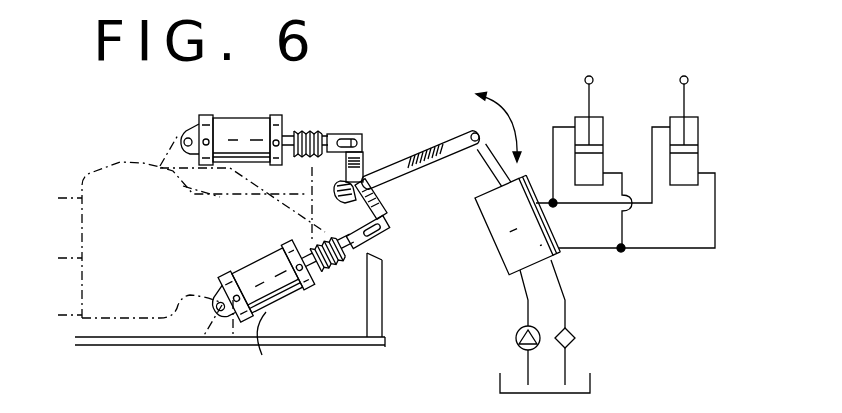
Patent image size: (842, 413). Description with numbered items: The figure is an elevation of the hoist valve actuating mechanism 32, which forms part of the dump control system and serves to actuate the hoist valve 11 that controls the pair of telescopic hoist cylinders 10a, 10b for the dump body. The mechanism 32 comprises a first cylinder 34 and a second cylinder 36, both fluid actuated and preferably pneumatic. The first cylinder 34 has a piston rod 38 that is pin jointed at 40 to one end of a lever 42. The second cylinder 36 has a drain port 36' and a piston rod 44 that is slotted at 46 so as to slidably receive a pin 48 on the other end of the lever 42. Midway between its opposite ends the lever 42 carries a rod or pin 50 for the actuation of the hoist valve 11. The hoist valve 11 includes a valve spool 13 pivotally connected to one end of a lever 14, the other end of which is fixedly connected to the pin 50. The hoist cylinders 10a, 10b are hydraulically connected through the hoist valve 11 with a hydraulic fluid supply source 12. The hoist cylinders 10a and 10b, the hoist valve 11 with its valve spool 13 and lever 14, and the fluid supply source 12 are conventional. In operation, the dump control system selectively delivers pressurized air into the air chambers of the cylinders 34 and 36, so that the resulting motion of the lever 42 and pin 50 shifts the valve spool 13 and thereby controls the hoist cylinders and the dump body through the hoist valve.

The hoist cylinder 10a is at (575, 118).
The hoist cylinder 10b is at (670, 118).
The hoist valve 11 is at (500, 226).
The hydraulic fluid supply source 12 is at (577, 332).
The valve spool 13 is at (482, 162).
The lever 14 is at (447, 145).
The hoist valve actuating mechanism 32 is at (376, 125).
The first cylinder 34 is at (243, 123).
The second cylinder 36 is at (264, 277).
The drain port 36' is at (263, 347).
The piston rod 38 is at (329, 136).
The pin joint 40 is at (363, 142).
The lever 42 is at (372, 197).
The piston rod 44 is at (348, 254).
The slot 46 is at (378, 238).
The pin 48 is at (386, 222).
The rod or pin 50 is at (334, 186).